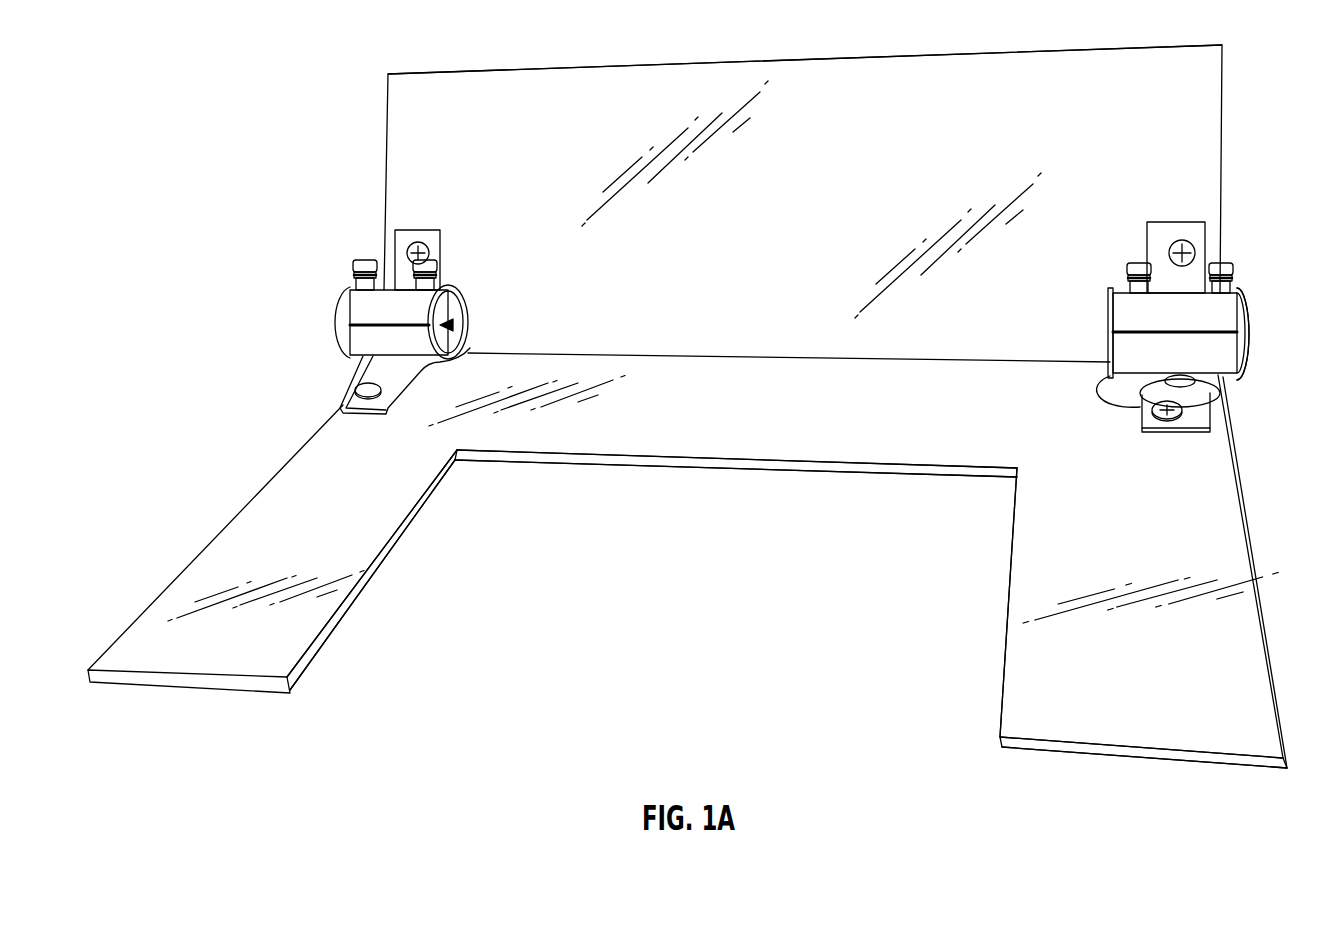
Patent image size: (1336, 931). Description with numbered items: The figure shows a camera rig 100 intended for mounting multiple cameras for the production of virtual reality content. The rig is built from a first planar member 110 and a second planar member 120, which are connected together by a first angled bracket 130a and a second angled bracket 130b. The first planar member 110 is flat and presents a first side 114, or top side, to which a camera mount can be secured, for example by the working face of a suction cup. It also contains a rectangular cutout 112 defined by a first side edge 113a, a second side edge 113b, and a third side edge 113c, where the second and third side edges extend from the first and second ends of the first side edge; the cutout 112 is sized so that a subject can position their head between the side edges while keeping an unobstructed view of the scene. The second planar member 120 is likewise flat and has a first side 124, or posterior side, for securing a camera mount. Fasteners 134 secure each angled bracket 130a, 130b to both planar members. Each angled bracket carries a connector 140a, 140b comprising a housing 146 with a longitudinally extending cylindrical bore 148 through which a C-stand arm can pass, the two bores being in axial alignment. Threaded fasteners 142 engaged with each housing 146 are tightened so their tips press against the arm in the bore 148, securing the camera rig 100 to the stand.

The camera rig 100 is at (247, 184).
The first planar member 110 is at (687, 571).
The rectangular cutout 112 is at (515, 701).
The first side edge 113a is at (652, 456).
The second side edge 113b is at (370, 580).
The third side edge 113c is at (1000, 643).
The first side 114 is at (1022, 550).
The second planar member 120 is at (1208, 122).
The first side 124 is at (545, 82).
The first angled bracket 130a is at (442, 230).
The second angled bracket 130b is at (1157, 229).
The fastener 134 is at (420, 243).
The first connector 140a is at (452, 298).
The second connector 140b is at (1128, 352).
The threaded fastener 142 is at (366, 260).
The housing 146 is at (342, 330).
The cylindrical bore 148 is at (452, 325).